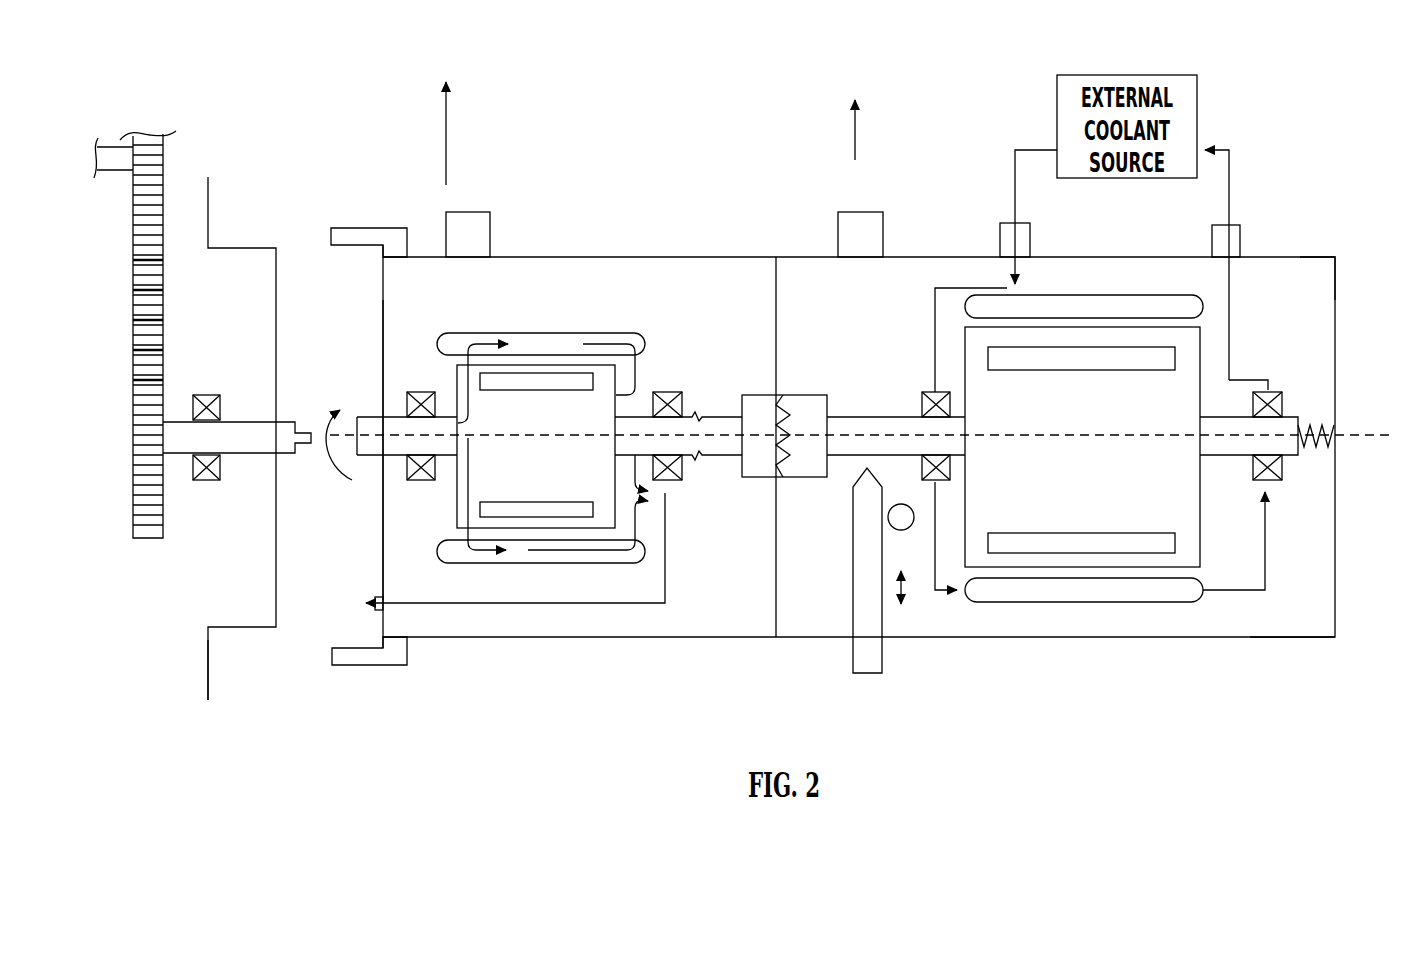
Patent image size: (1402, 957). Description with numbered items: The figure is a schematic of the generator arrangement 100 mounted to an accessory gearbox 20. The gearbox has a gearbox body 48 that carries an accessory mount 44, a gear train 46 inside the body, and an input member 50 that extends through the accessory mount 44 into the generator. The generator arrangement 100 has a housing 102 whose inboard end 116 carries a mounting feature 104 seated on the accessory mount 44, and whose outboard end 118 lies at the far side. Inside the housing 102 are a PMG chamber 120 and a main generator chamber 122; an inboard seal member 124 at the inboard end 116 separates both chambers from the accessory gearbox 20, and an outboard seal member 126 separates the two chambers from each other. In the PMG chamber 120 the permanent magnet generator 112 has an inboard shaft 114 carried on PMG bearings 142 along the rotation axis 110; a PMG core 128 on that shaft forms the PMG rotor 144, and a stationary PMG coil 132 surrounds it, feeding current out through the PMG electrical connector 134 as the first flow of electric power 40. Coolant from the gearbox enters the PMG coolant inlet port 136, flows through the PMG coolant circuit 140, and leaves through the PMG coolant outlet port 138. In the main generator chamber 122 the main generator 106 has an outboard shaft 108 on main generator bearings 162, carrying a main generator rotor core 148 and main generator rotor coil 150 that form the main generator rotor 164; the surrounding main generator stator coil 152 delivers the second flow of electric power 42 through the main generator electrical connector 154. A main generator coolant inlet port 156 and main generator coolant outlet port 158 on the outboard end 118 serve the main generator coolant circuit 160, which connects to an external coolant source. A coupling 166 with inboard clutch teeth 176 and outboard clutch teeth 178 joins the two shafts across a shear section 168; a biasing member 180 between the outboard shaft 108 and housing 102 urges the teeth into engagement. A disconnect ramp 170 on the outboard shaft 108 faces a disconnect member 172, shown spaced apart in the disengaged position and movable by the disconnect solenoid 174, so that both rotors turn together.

The accessory gearbox 20 is at (249, 148).
The first flow of electric power 40 is at (447, 98).
The second flow of electric power 42 is at (855, 133).
The accessory mount 44 is at (255, 248).
The gear train 46 is at (133, 386).
The gearbox body 48 is at (209, 668).
The input member 50 is at (257, 455).
The generator arrangement 100 is at (440, 754).
The housing 102 is at (630, 257).
The mounting feature 104 is at (368, 240).
The main generator 106 is at (1296, 240).
The outboard shaft 108 is at (1238, 449).
The rotation axis 110 is at (1381, 438).
The permanent magnet generator 112 is at (531, 182).
The inboard shaft 114 is at (395, 448).
The inboard end 116 is at (377, 683).
The outboard end 118 is at (1299, 652).
The PMG chamber 120 is at (726, 309).
The main generator chamber 122 is at (1286, 312).
The inboard seal member 124 is at (383, 318).
The outboard seal member 126 is at (776, 596).
The PMG core 128 is at (616, 393).
The PMG coil 132 is at (503, 334).
The PMG electrical connector 134 is at (464, 212).
The PMG coolant inlet port 136 is at (350, 452).
The PMG coolant outlet port 138 is at (378, 620).
The PMG coolant circuit 140 is at (620, 604).
The PMG bearings 142 is at (684, 394).
The PMG rotor 144 is at (445, 380).
The main generator rotor coil 150 is at (560, 502).
The main generator rotor core 148 is at (1199, 372).
The main generator stator coil 152 is at (1091, 295).
The main generator electrical connector 154 is at (868, 212).
The main generator coolant inlet port 156 is at (1030, 243).
The main generator coolant outlet port 158 is at (1240, 243).
The main generator coolant circuit 160 is at (950, 596).
The main generator bearings 162 is at (1284, 401).
The main generator rotor 164 is at (1020, 470).
The coupling 166 is at (807, 385).
The shear section 168 is at (695, 472).
The disconnect ramp 170 is at (893, 458).
The disconnect member 172 is at (862, 662).
The disconnect solenoid 174 is at (913, 596).
The inboard clutch teeth 176 is at (758, 477).
The outboard clutch teeth 178 is at (797, 477).
The biasing member 180 is at (1332, 444).